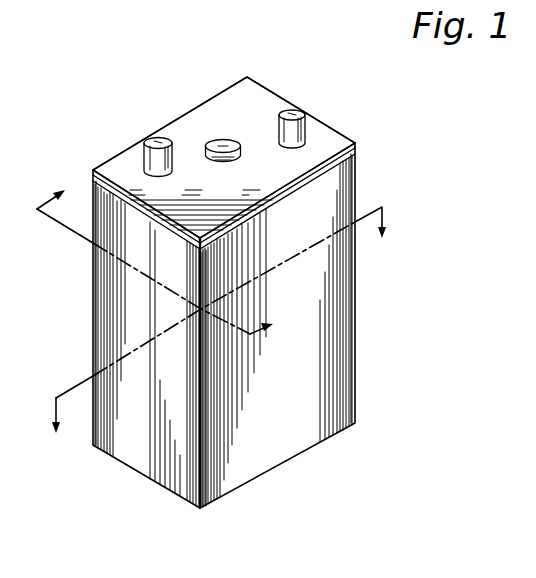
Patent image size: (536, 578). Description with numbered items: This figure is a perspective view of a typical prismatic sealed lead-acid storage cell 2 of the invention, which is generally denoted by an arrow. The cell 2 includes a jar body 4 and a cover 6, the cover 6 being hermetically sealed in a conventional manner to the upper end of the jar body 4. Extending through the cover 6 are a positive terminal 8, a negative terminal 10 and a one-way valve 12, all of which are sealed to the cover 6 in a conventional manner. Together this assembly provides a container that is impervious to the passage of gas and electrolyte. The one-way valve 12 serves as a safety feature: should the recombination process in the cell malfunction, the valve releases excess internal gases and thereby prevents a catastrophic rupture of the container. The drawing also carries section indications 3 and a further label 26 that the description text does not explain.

The storage cell 2 is at (408, 330).
The section line 3- 3 is at (219, 334).
The jar body 4 is at (347, 178).
The cover 6 is at (255, 94).
The positive terminal 8 is at (295, 112).
The negative terminal 10 is at (156, 142).
The one-way valve 12 is at (218, 141).
The element 26 is at (535, 489).